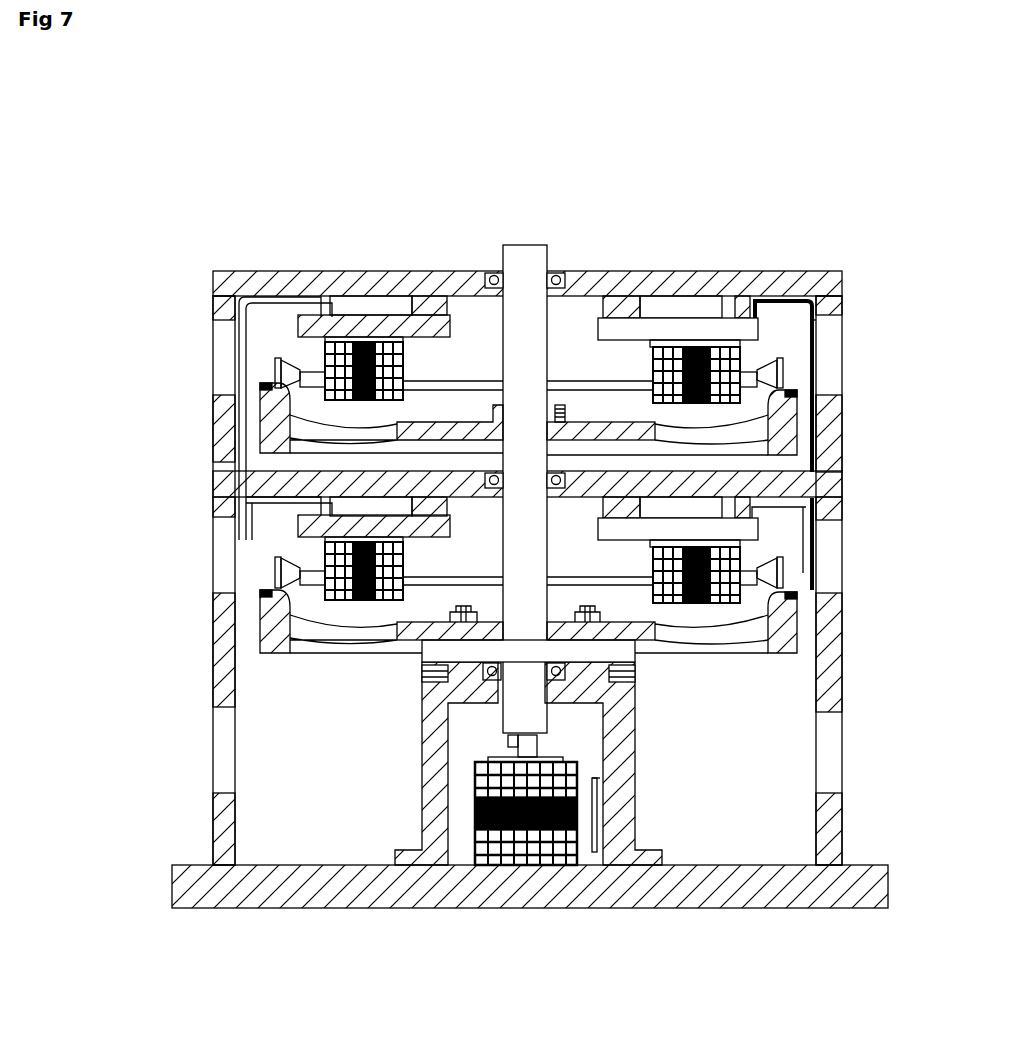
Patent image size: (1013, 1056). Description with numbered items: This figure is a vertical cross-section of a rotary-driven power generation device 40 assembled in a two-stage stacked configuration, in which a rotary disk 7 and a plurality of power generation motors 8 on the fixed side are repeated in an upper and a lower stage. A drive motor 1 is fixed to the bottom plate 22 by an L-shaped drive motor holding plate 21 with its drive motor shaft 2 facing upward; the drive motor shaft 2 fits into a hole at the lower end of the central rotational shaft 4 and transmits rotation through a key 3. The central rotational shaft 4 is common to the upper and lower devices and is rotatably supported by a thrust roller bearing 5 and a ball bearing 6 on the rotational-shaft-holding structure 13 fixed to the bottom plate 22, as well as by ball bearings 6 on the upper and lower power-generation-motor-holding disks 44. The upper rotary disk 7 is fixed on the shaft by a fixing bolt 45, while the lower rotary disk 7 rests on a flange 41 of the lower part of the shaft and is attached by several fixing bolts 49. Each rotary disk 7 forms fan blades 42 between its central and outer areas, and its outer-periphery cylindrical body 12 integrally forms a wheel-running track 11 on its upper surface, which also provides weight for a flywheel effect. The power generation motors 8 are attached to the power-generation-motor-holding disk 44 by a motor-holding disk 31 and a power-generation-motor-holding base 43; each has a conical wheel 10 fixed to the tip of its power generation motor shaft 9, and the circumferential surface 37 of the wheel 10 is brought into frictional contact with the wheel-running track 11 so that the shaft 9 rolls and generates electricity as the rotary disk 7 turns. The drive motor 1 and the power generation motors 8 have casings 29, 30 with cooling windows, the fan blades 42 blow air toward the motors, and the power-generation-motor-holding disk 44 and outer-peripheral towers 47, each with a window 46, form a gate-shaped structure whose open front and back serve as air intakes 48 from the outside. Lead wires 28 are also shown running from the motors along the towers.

The drive motor 1 is at (476, 805).
The drive motor shaft 2 is at (540, 742).
The key 3 is at (506, 742).
The central rotational shaft 4 is at (542, 553).
The thrust roller bearing 5 is at (424, 672).
The ball bearing 6 is at (557, 274).
The rotary disk 7 is at (488, 425).
The power generation motor 8 is at (405, 365).
The power generation motor shaft 9 is at (313, 390).
The wheel 10 is at (289, 362).
The wheel-running track 11 is at (263, 380).
The cylindrical body 12 is at (790, 423).
The rotational-shaft-holding structure 13 is at (636, 740).
The drive motor holding plate 21 is at (592, 810).
The bottom plate 22 is at (305, 862).
The lead wire 28 is at (246, 531).
The casing 29 is at (478, 778).
The casing 30 is at (742, 350).
The motor-holding disk 31 is at (404, 341).
The circumferential surface 37 is at (277, 368).
The rotary-driven power generation device 40 is at (791, 265).
The flange 41 is at (622, 657).
The fan blades 42 is at (400, 422).
The power-generation-motor-holding base 43 is at (450, 330).
The power-generation-motor-holding disk 44 is at (436, 276).
The fixing bolt 45 is at (566, 413).
The window 46 is at (222, 360).
The outer-peripheral tower 47 is at (224, 414).
The air intake 48 is at (788, 322).
The fixing bolt 49 is at (452, 616).